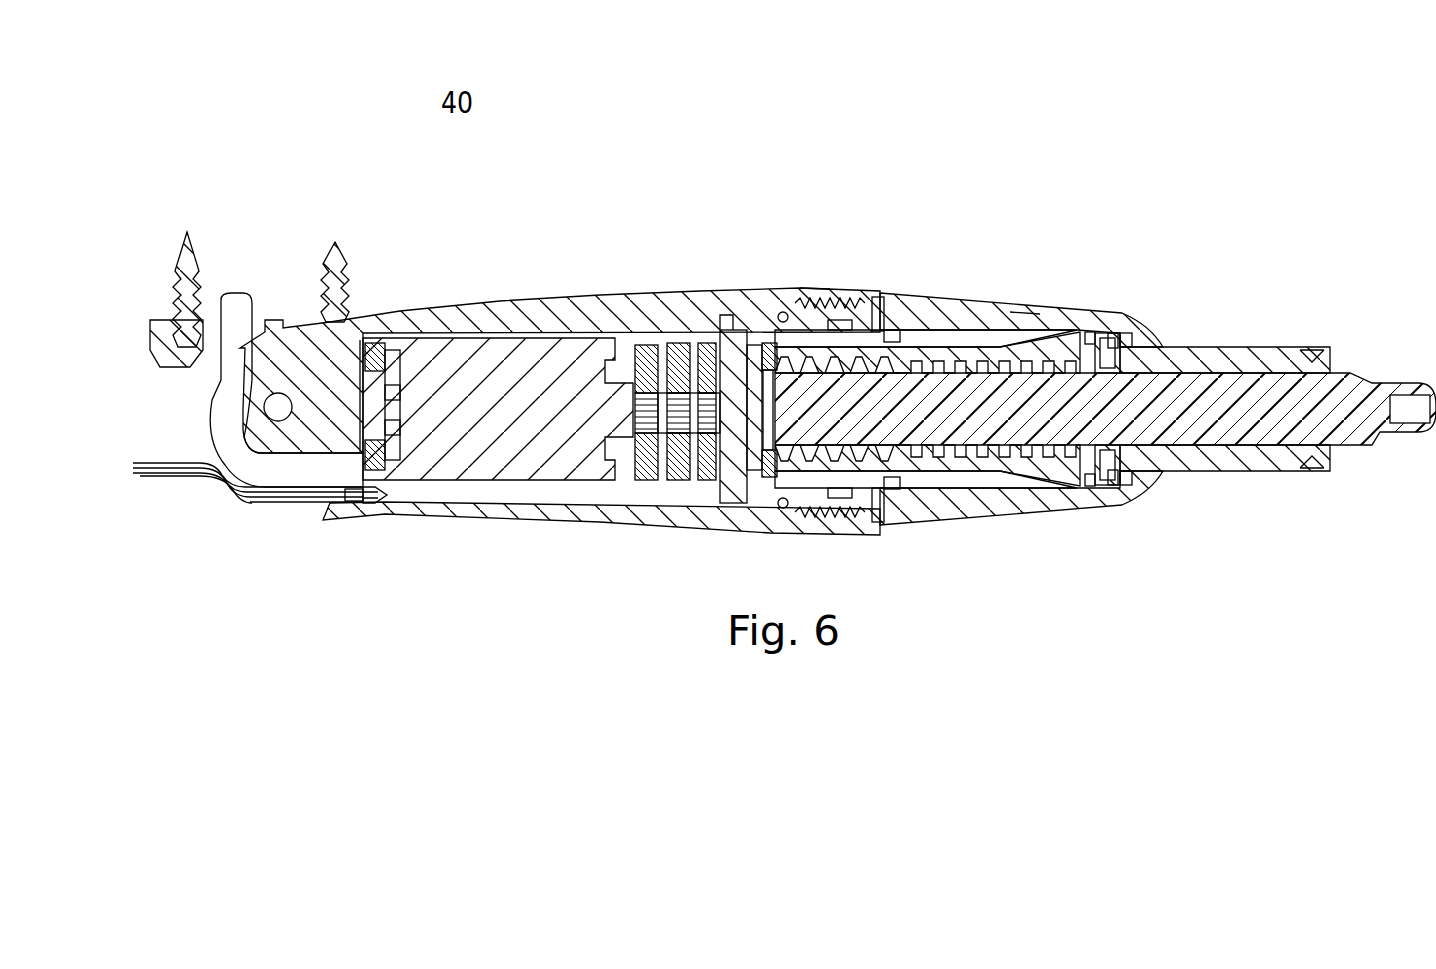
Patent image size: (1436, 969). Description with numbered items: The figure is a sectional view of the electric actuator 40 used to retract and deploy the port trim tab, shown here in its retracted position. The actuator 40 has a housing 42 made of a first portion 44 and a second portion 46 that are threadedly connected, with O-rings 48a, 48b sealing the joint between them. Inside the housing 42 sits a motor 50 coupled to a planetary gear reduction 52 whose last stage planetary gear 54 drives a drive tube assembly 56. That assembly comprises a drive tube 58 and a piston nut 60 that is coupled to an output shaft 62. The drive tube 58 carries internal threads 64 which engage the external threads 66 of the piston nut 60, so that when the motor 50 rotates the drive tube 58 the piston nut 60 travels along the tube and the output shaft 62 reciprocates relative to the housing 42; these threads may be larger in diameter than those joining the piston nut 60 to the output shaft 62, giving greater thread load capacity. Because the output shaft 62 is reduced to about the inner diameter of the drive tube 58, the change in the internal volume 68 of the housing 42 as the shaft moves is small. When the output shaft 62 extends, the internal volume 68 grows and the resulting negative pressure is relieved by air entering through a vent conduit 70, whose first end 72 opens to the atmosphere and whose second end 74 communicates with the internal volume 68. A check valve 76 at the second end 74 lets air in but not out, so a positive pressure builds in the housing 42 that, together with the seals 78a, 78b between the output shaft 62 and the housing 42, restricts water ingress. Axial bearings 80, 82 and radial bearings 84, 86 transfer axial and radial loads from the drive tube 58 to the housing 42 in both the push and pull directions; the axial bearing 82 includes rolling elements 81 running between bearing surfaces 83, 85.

The actuator 40 is at (497, 218).
The housing 42 is at (812, 285).
The first portion 44 is at (525, 310).
The second portion 46 is at (910, 307).
The O-ring 48a is at (783, 313).
The O-ring 48b is at (876, 298).
The motor 50 is at (450, 397).
The planetary gear reduction 52 is at (647, 468).
The last stage planetary gear 54 is at (717, 463).
The drive tube assembly 56 is at (893, 482).
The drive tube 58 is at (973, 468).
The piston nut 60 is at (830, 466).
The output shaft 62 is at (1212, 437).
The internal threads 64 is at (965, 330).
The external threads 66 is at (840, 330).
The internal volume 68 is at (727, 505).
The vent conduit 70 is at (255, 500).
The first end 72 is at (168, 477).
The second end 74 is at (387, 495).
The check valve 76 is at (362, 498).
The seal 78a is at (1118, 368).
The seal 78b is at (1327, 367).
The axial bearing 80 is at (746, 336).
The rolling elements 81 is at (1115, 487).
The axial bearing 82 is at (1082, 328).
The bearing surface 83 is at (1127, 487).
The radial bearing 84 is at (783, 317).
The bearing surface 85 is at (1090, 482).
The radial bearing 86 is at (1023, 312).